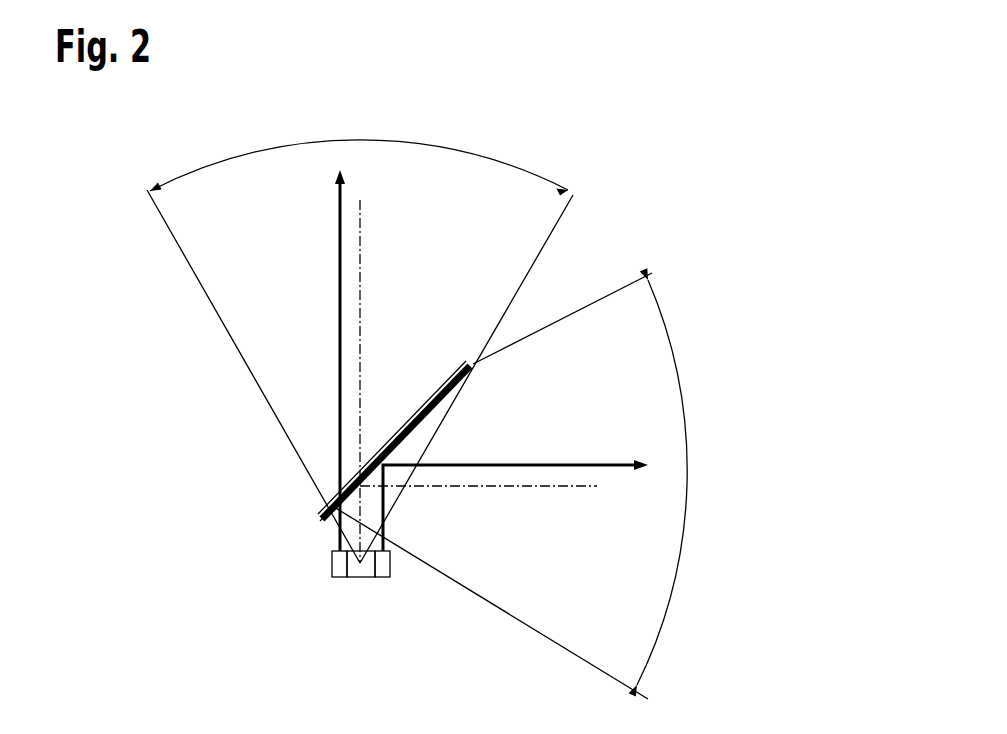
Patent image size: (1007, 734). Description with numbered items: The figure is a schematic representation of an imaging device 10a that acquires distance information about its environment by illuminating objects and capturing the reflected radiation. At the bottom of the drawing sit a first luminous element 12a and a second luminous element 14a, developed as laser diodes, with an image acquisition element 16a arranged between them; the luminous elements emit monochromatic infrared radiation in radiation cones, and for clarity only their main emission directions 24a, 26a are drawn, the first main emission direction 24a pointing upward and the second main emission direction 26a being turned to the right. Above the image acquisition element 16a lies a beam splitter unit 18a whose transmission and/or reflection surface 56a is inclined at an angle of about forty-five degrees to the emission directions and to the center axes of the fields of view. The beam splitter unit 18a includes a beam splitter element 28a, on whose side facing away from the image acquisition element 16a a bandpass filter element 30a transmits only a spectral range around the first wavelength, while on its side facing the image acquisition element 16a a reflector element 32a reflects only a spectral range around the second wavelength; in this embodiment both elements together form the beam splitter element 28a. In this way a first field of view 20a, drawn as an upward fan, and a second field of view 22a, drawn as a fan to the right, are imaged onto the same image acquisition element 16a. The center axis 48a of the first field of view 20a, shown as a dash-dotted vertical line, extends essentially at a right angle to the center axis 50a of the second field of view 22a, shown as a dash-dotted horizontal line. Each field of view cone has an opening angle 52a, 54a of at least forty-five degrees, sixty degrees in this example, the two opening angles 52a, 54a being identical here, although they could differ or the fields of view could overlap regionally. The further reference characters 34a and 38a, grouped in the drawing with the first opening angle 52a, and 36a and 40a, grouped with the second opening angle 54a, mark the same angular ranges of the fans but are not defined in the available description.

The imaging device 10a is at (200, 605).
The first luminous element 12a is at (338, 578).
The second luminous element 14a is at (385, 578).
The image acquisition element 16a is at (360, 578).
The beam splitter unit 18a is at (428, 310).
The first field of view 20a is at (200, 288).
The second field of view 22a is at (555, 645).
The main emission direction 24a is at (338, 205).
The main emission direction 26a is at (612, 463).
The beam splitter element 28a is at (423, 413).
The bandpass filter element 30a is at (318, 520).
The reflector element 32a is at (318, 527).
The first scanning range 34a is at (336, 322).
The second scanning range 36a is at (587, 486).
The first field of view 38a is at (336, 322).
The second field of view 40a is at (587, 486).
The center axis 48a is at (362, 207).
The center axis 50a is at (553, 489).
The opening angle 52a is at (465, 150).
The opening angle 54a is at (684, 423).
The transmission and/or reflection surface 56a is at (412, 438).